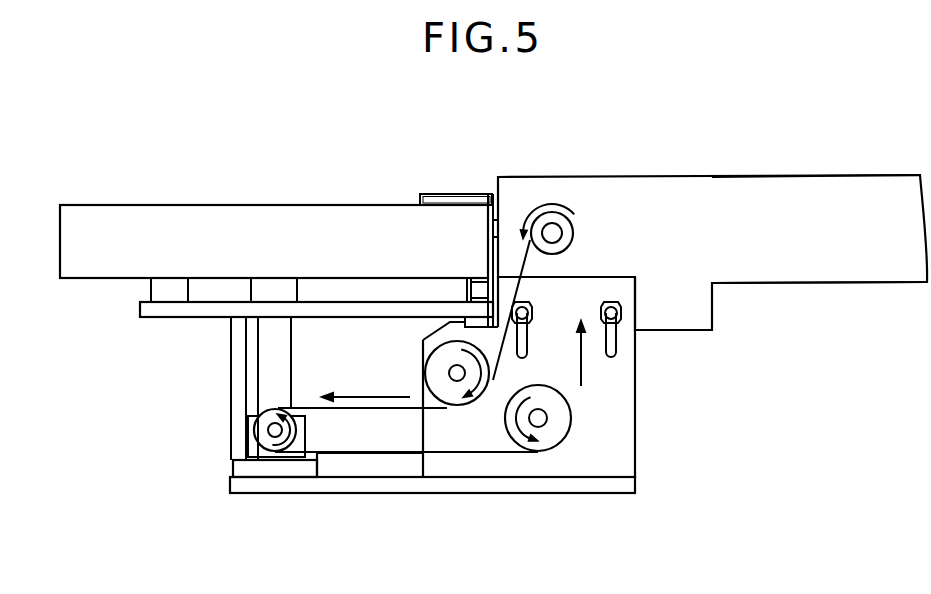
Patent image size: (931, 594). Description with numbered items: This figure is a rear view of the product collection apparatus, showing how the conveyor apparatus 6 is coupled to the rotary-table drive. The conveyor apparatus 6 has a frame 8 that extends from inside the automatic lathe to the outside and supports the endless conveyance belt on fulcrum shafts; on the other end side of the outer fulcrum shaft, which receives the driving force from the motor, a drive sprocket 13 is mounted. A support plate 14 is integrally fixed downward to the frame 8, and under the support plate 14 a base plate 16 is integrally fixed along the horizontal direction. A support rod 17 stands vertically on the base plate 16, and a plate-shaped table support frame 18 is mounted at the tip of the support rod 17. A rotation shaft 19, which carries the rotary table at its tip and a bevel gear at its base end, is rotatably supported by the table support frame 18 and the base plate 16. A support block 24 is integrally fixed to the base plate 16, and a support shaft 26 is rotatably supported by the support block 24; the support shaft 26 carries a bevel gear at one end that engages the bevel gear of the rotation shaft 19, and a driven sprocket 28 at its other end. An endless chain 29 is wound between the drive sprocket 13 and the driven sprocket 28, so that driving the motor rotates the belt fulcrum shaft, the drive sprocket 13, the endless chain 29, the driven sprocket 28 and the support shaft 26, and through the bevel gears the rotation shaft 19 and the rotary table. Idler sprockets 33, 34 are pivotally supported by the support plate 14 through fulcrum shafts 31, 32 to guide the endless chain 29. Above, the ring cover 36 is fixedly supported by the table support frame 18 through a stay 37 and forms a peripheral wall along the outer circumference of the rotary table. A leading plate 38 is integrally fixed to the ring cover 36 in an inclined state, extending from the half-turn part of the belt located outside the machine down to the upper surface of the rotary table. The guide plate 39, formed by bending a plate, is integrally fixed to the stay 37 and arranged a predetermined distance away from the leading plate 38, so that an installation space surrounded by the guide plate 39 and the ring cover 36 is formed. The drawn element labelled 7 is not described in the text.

The conveyor apparatus 6 is at (638, 158).
The sheet tray / stacking section 7 is at (110, 180).
The frame 8 is at (717, 190).
The drive sprocket 13 is at (561, 214).
The support plate 14 is at (620, 388).
The base plate 16 is at (447, 483).
The support rod 17 is at (235, 382).
The table support frame 18 is at (198, 308).
The rotation shaft 19 is at (277, 343).
The support block 24 is at (286, 472).
The support shaft 26 is at (271, 438).
The driven sprocket 28 is at (255, 432).
The endless chain 29 is at (360, 454).
The fulcrum shaft 31 is at (457, 375).
The fulcrum shaft 32 is at (538, 422).
The idler sprocket 33 is at (458, 392).
The idler sprocket 34 is at (558, 434).
The ring cover 36 is at (347, 216).
The stay 37 is at (168, 288).
The leading plate 38 is at (491, 204).
The guide plate 39 is at (422, 195).